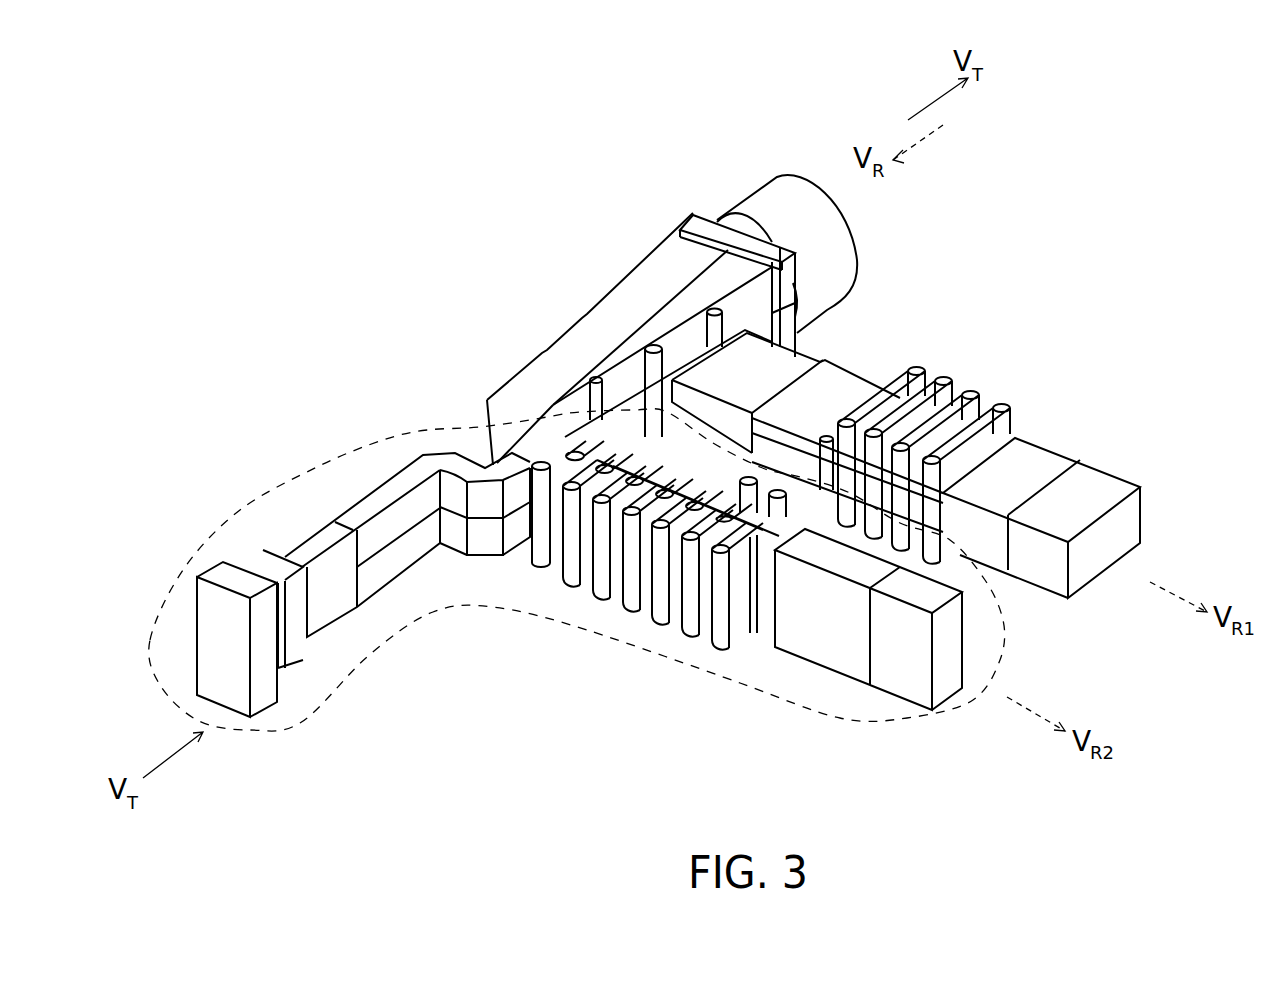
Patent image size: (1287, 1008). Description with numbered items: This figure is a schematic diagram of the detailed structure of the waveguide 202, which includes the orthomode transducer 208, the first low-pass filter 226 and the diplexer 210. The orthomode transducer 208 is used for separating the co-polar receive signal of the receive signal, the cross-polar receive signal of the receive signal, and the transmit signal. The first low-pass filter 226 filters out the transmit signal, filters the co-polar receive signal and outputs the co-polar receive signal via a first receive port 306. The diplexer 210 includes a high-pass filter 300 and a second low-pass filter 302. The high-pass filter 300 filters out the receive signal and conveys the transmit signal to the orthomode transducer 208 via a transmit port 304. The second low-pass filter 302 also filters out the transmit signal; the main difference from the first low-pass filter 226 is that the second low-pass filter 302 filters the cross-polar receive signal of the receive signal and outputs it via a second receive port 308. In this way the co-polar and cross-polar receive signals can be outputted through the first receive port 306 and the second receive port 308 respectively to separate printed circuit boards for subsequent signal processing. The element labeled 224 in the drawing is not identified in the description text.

The waveguide 202 is at (1083, 190).
The orthomode transducer 208 is at (563, 325).
The diplexer 210 is at (587, 632).
The cylindrical member 224 is at (857, 253).
The first low-pass filter 226 is at (963, 393).
The high-pass filter 300 is at (367, 507).
The second low-pass filter 302 is at (660, 613).
The transmit port 304 is at (207, 618).
The first receive port 306 is at (1093, 568).
The second receive port 308 is at (942, 688).